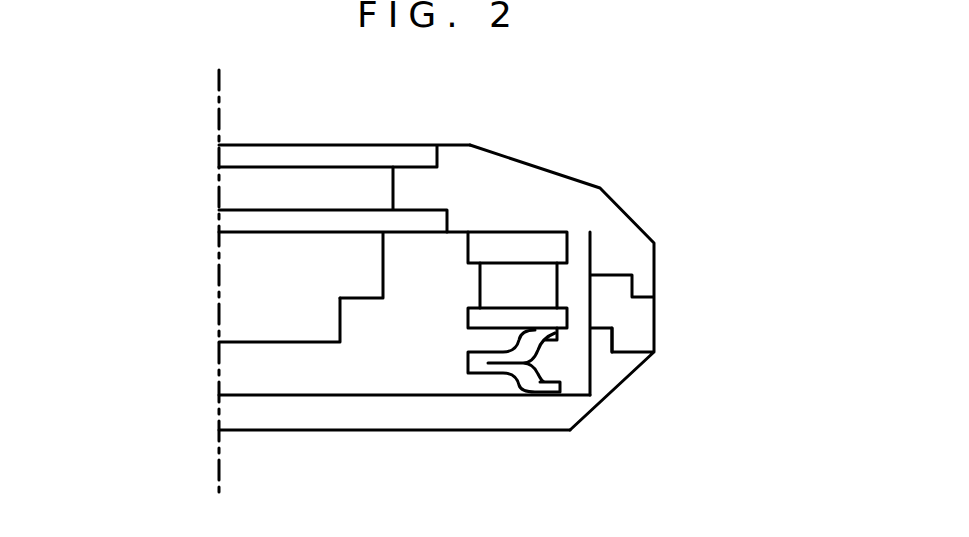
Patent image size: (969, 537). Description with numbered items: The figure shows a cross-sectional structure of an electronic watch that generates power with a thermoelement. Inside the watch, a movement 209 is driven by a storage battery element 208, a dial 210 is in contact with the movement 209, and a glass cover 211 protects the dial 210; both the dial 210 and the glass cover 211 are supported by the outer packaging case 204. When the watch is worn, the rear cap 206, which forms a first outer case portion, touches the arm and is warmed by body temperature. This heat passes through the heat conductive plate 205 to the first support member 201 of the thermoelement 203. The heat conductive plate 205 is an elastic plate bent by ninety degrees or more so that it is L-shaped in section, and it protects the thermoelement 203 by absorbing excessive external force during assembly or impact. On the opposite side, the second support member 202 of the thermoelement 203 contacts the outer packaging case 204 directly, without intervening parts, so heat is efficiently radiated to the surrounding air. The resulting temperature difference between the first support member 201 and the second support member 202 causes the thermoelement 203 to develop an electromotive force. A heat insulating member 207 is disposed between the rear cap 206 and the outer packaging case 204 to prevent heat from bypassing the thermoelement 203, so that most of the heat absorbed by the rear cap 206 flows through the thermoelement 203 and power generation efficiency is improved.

The first support member 201 is at (547, 320).
The second support member 202 is at (545, 255).
The thermoelement 203 is at (492, 285).
The outer packaging case 204 is at (622, 243).
The heat conductive plate 205 is at (535, 383).
The rear cap 206 is at (372, 415).
The heat insulating member 207 is at (632, 318).
The storage battery element 208 is at (253, 328).
The movement 209 is at (253, 275).
The dial 210 is at (253, 222).
The glass cover 211 is at (338, 157).